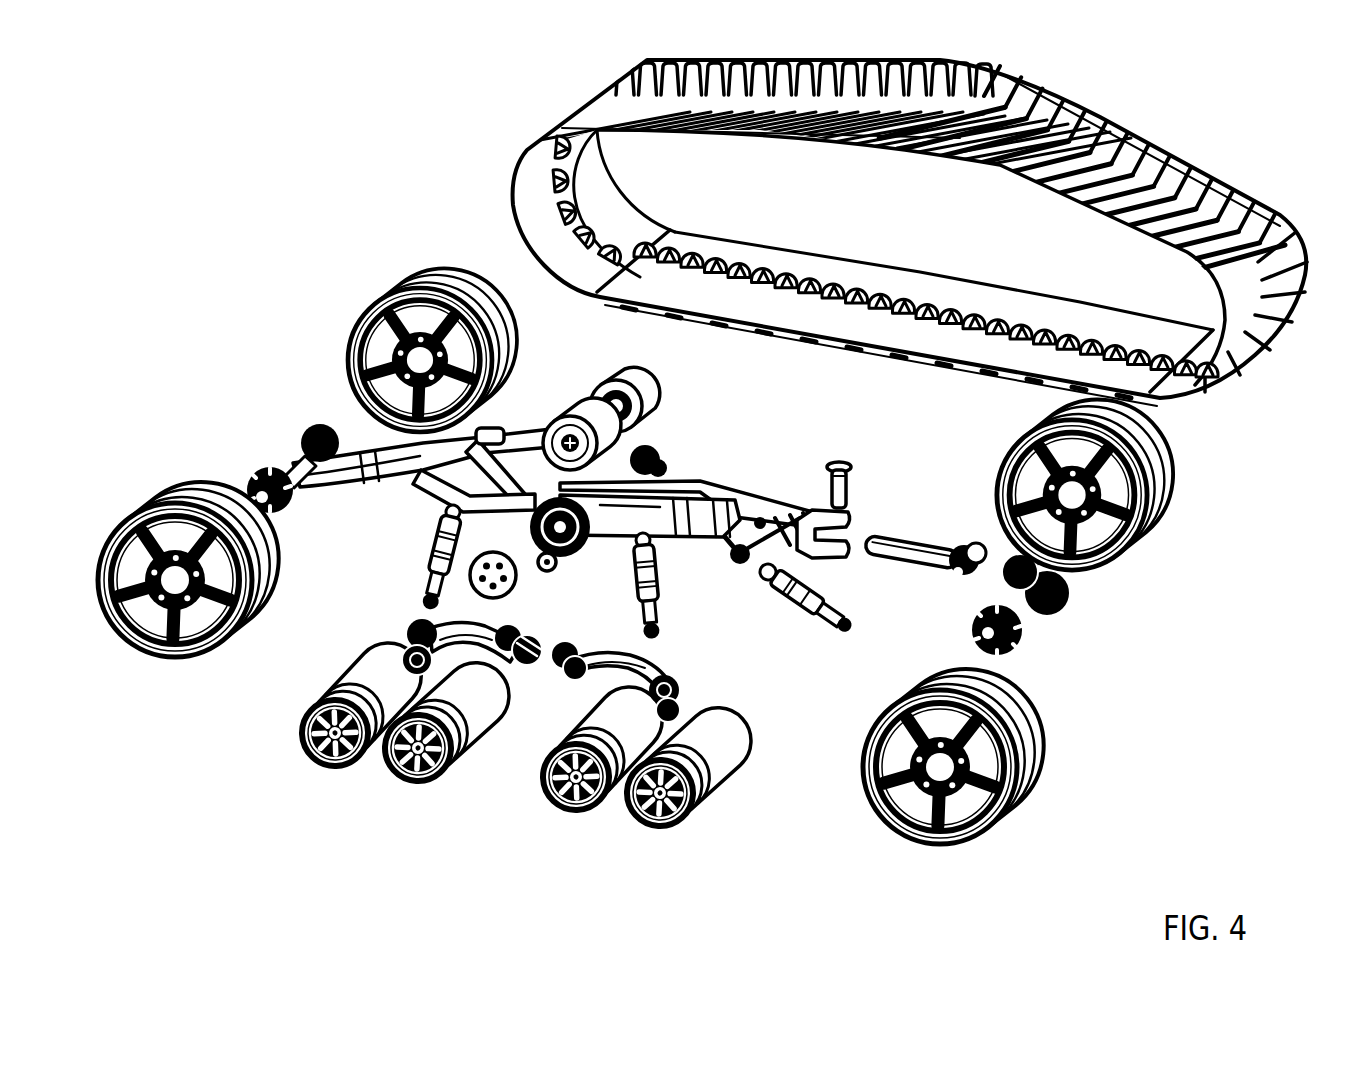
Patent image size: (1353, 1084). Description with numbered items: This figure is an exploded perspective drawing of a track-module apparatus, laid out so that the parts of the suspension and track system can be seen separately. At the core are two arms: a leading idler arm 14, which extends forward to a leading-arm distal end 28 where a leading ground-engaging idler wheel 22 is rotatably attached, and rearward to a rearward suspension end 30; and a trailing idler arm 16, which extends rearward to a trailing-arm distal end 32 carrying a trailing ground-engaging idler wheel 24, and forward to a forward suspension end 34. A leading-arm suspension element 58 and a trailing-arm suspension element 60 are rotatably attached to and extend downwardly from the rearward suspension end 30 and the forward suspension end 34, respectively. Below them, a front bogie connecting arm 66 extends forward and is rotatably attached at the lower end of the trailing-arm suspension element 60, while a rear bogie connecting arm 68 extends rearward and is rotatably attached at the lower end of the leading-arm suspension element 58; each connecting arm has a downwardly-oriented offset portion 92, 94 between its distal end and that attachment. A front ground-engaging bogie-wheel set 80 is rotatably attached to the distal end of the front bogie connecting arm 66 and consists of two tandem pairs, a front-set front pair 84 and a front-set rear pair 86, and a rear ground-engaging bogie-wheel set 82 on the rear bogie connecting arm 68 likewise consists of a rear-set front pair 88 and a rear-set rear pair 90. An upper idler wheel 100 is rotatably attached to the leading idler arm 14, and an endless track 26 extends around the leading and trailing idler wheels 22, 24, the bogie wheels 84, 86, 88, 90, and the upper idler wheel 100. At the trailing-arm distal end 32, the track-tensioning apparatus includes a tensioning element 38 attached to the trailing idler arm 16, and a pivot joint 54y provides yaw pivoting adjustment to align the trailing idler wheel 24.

The leading idler arm 14 is at (353, 477).
The trailing idler arm 16 is at (713, 487).
The leading ground-engaging idler wheel 22 is at (438, 265).
The trailing ground-engaging idler wheel 24 is at (1140, 512).
The endless track 26 is at (776, 318).
The leading-arm distal end 28 is at (297, 432).
The rearward suspension end 30 is at (653, 452).
The trailing-arm distal end 32 is at (953, 576).
The forward suspension end 34 is at (498, 430).
The tensioning element 38 is at (793, 600).
The pivot joint 54y is at (833, 447).
The leading-arm suspension element 58 is at (653, 581).
The trailing-arm suspension element 60 is at (443, 553).
The front bogie connecting arm 66 is at (480, 632).
The rear bogie connecting arm 68 is at (597, 658).
The front ground-engaging bogie-wheel set 80 is at (436, 711).
The rear ground-engaging bogie-wheel set 82 is at (644, 733).
The front-set front pair of bogie wheels 84 is at (378, 674).
The front-set rear pair of bogie wheels 86 is at (480, 701).
The rear-set front pair of bogie wheels 88 is at (620, 721).
The rear-set rear pair of bogie wheels 90 is at (723, 747).
The downwardly-oriented offset portion 92 is at (405, 645).
The downwardly-oriented offset portion 94 is at (680, 697).
The upper idler wheel 100 is at (574, 418).